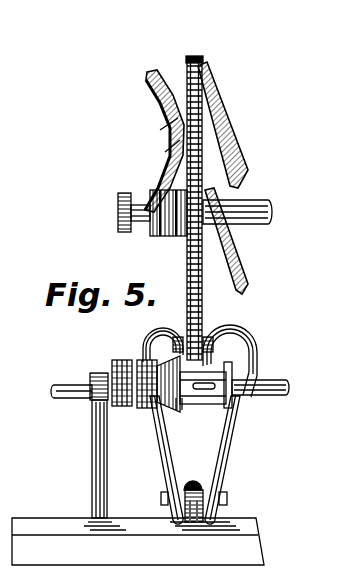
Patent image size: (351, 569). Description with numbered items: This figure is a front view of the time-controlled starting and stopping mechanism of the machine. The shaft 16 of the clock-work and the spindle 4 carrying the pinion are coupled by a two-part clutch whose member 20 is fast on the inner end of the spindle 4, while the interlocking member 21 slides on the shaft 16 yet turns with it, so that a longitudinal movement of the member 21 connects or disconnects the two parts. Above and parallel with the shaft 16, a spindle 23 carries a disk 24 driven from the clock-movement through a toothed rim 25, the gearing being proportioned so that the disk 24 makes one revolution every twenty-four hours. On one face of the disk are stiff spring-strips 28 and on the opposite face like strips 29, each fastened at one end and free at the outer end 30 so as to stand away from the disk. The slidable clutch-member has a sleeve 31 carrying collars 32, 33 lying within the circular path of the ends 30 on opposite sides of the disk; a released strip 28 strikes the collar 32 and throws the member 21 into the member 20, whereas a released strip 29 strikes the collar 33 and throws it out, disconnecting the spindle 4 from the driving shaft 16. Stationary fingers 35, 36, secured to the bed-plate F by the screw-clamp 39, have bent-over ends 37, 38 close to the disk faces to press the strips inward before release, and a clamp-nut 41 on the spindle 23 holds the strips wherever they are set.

The spindle 4 is at (82, 393).
The shaft 16 is at (262, 387).
The clutch member 20 is at (130, 407).
The interlocking clutch member 21 is at (152, 421).
The spindle 23 is at (263, 205).
The disk 24 is at (186, 303).
The toothed rim 25 is at (198, 58).
The spring-strips 28 is at (177, 121).
The spring-strips 29 is at (223, 120).
The outer end of spring-strip 30 is at (146, 92).
The sleeve 31 is at (218, 399).
The collar 32 is at (178, 410).
The collar 33 is at (248, 366).
The stationary finger 35 is at (165, 466).
The stationary finger 36 is at (232, 467).
The bent end of finger 37 is at (144, 344).
The bent end of finger 38 is at (226, 334).
The screw-clamp 39 is at (202, 475).
The clamp-nut 41 is at (165, 236).
The bed-plate F is at (248, 519).